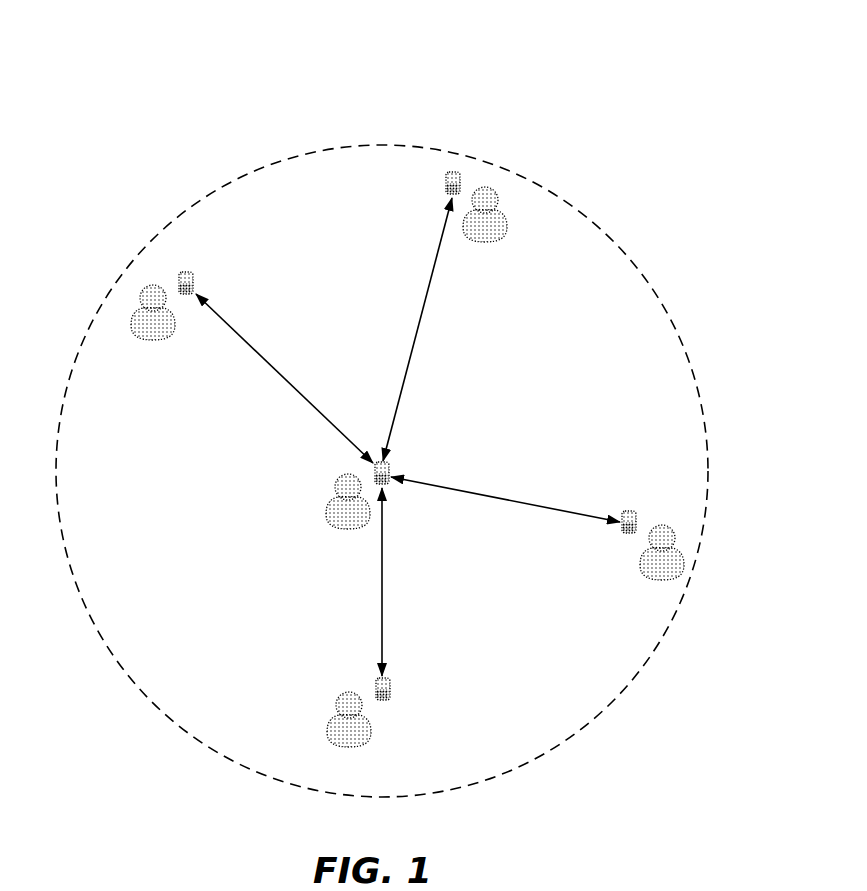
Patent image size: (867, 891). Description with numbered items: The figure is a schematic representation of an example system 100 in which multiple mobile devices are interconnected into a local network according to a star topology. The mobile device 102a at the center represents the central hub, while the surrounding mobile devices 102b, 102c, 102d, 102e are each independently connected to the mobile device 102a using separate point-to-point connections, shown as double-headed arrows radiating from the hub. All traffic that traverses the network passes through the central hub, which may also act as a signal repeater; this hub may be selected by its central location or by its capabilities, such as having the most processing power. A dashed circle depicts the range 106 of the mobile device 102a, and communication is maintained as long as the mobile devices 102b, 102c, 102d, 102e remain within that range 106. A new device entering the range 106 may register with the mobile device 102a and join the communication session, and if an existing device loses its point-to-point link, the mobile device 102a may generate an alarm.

The system 100 is at (484, 80).
The range 106 is at (297, 160).
The mobile device 102a is at (375, 477).
The mobile device 102b is at (460, 190).
The mobile device 102c is at (640, 525).
The mobile device 102d is at (375, 692).
The mobile device 102e is at (178, 285).